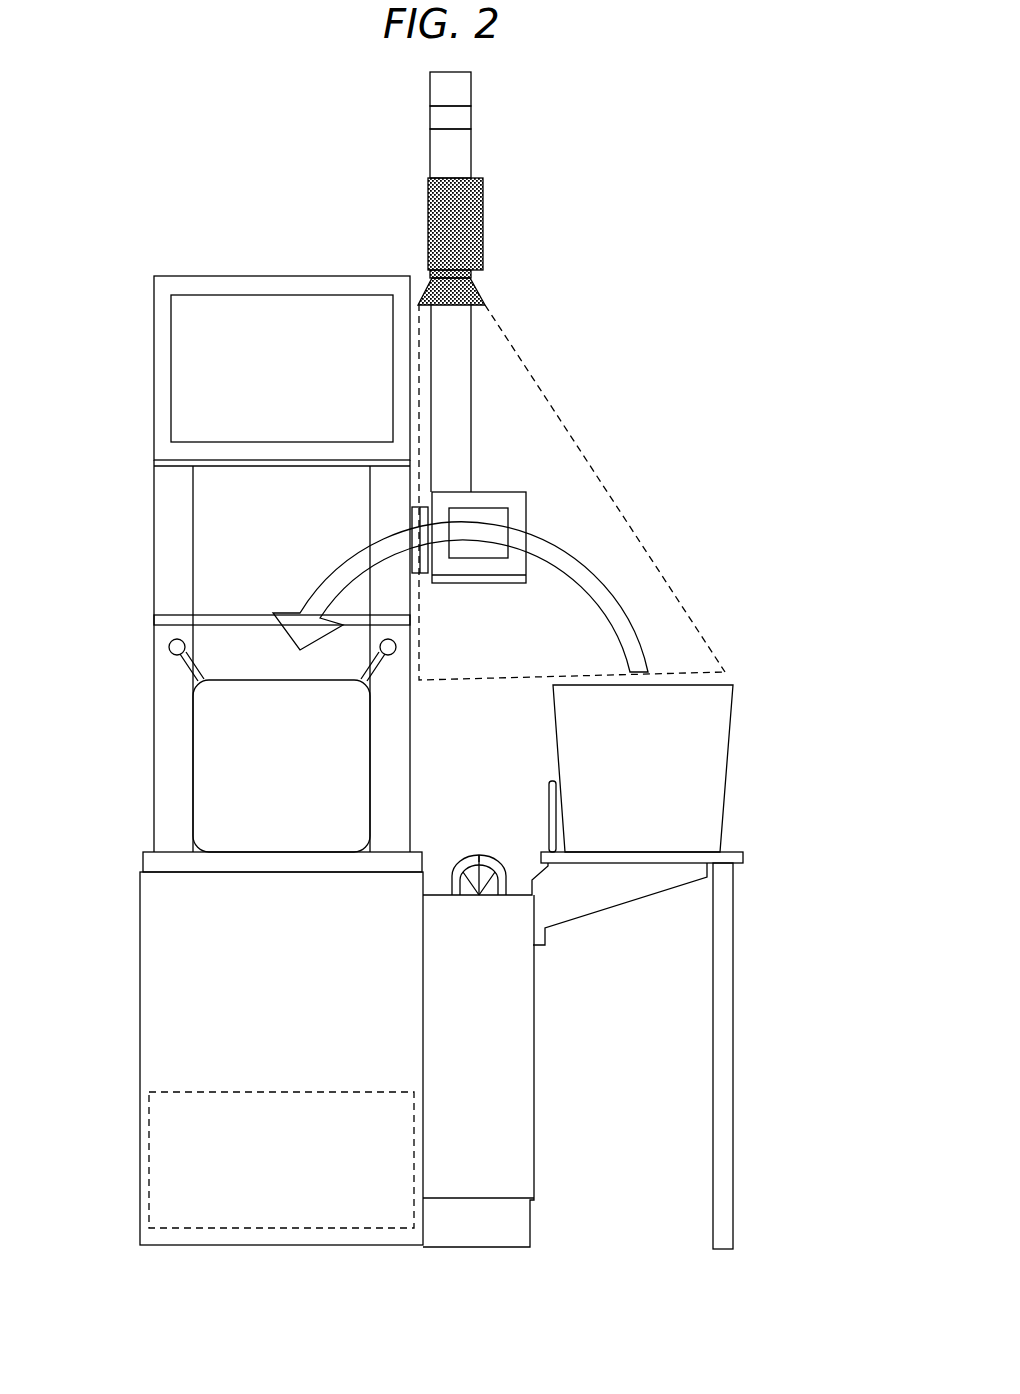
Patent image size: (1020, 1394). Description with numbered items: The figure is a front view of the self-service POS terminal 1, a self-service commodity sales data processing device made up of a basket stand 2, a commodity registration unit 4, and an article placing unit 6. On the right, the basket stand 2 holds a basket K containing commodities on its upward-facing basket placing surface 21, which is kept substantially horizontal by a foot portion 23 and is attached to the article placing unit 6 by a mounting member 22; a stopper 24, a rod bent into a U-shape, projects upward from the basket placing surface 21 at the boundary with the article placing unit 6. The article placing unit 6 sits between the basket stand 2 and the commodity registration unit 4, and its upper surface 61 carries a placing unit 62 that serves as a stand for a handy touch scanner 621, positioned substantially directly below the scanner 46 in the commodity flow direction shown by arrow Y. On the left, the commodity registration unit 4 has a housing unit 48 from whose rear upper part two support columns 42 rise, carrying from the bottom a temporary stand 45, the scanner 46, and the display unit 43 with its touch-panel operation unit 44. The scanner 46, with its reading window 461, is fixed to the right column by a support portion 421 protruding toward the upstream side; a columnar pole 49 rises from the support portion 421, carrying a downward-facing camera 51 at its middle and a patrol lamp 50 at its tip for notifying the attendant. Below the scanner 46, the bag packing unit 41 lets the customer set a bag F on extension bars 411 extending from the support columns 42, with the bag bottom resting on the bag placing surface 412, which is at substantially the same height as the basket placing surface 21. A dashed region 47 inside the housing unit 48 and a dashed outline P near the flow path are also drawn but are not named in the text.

The self-service POS terminal 1 is at (678, 190).
The basket stand 2 is at (668, 858).
The basket placing surface 21 is at (725, 850).
The mounting member 22 is at (583, 902).
The foot portion 23 is at (733, 1001).
The stopper 24 is at (550, 787).
The commodity registration unit 4 is at (152, 1031).
The bag packing unit 41 is at (147, 870).
The extension bars 411 is at (170, 649).
The bag placing surface 412 is at (153, 845).
The support columns 42 is at (158, 697).
The support portion 421 is at (425, 508).
The display unit 43 is at (157, 319).
The operation unit 44 is at (188, 372).
The temporary stand 45 is at (176, 612).
The scanner 46 is at (521, 510).
The reading window 461 is at (480, 510).
The controller 47 is at (158, 1149).
The housing unit 48 is at (175, 962).
The pole 49 is at (463, 151).
The patrol lamp 50 is at (465, 112).
The camera 51 is at (483, 232).
The article placing unit 6 is at (520, 1105).
The upper surface 61 is at (512, 890).
The placing unit 62 is at (478, 897).
The touch scanner 621 is at (478, 855).
The bag F is at (205, 739).
The basket K is at (734, 727).
The position P is at (686, 634).
The arrow Y is at (640, 598).